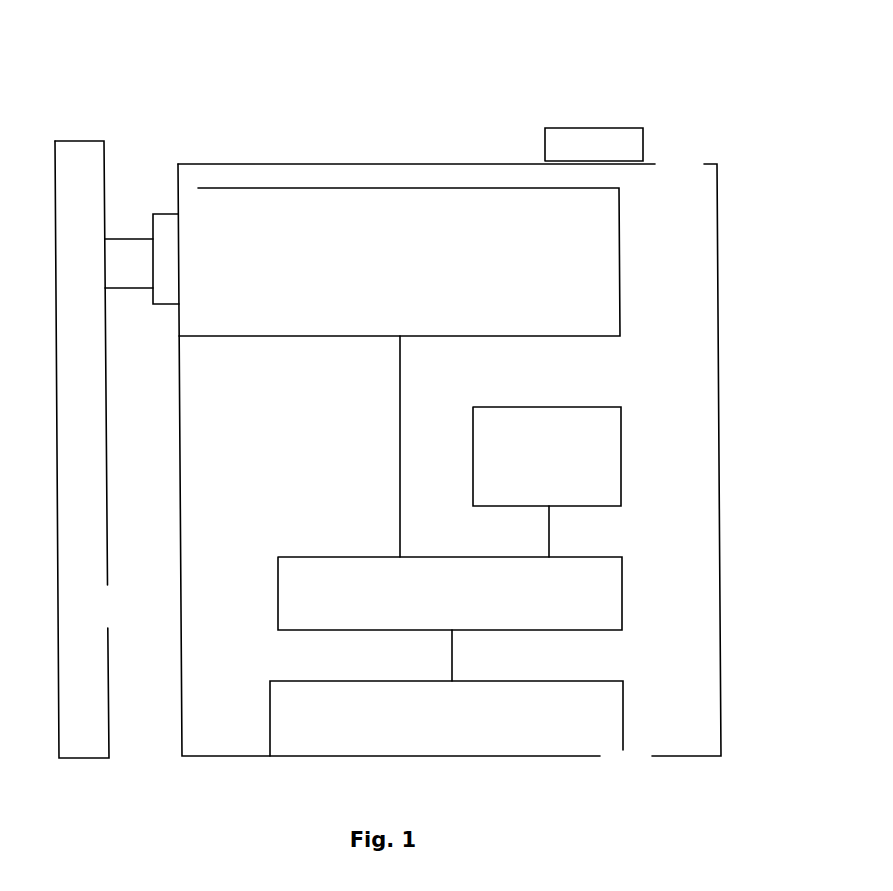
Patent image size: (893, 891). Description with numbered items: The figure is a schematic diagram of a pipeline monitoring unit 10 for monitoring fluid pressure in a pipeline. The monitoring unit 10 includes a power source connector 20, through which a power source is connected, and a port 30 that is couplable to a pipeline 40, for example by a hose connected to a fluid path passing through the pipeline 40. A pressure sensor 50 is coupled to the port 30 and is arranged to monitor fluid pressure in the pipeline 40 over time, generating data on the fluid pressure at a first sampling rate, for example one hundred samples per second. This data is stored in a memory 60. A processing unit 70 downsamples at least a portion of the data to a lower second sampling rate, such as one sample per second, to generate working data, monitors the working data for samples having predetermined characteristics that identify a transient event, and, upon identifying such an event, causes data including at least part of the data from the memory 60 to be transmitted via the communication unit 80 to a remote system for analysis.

The pipeline monitoring unit 10 is at (648, 220).
The power source connector 20 is at (599, 137).
The port 30 is at (164, 263).
The pipeline 40 is at (76, 200).
The pressure sensor 50 is at (232, 253).
The memory 60 is at (558, 468).
The processing unit 70 is at (553, 591).
The communication unit 80 is at (578, 723).